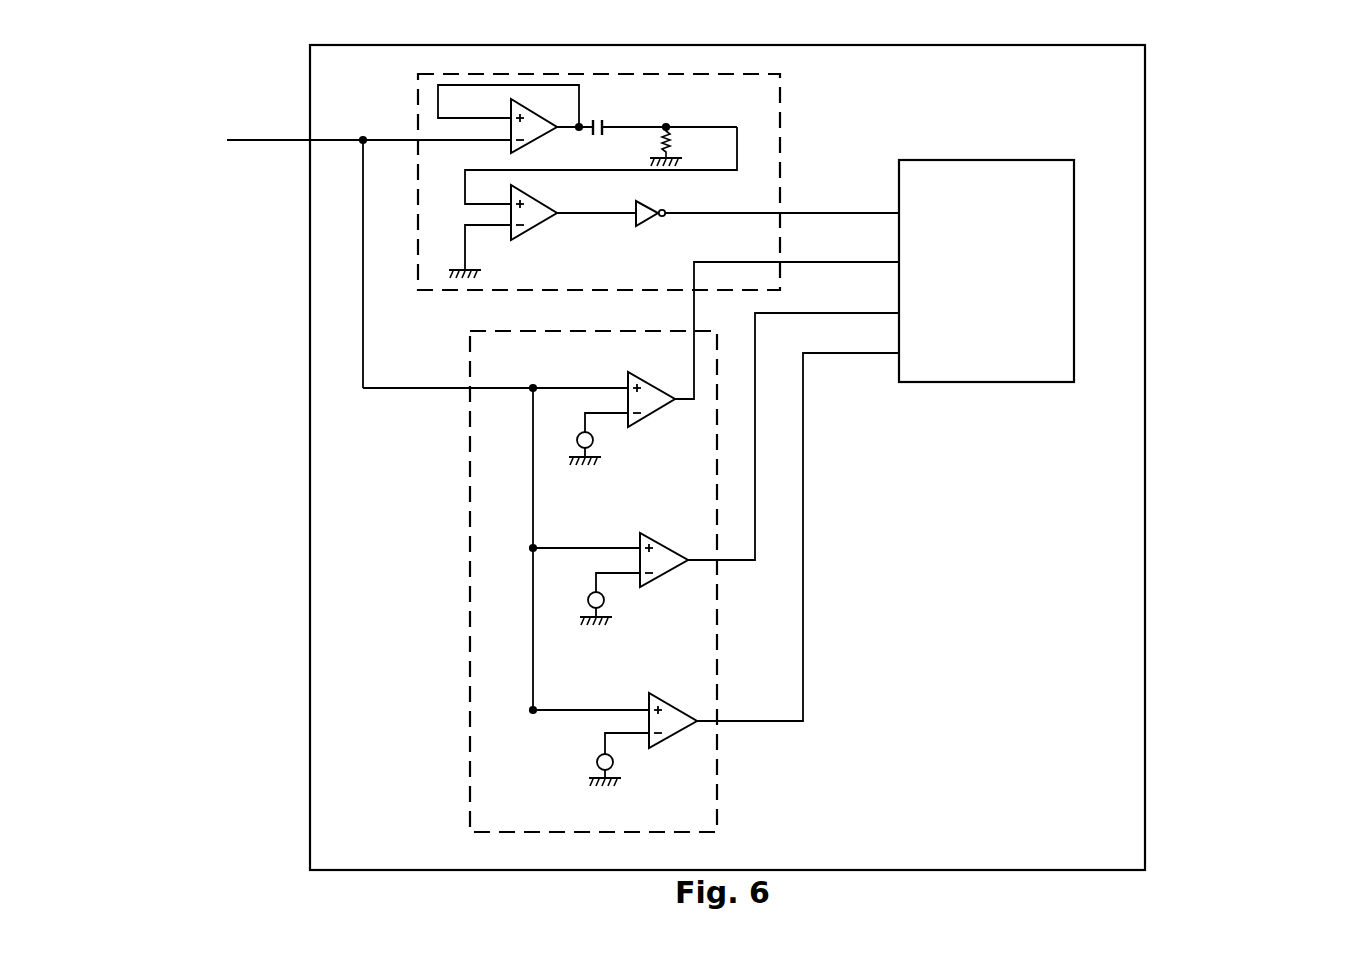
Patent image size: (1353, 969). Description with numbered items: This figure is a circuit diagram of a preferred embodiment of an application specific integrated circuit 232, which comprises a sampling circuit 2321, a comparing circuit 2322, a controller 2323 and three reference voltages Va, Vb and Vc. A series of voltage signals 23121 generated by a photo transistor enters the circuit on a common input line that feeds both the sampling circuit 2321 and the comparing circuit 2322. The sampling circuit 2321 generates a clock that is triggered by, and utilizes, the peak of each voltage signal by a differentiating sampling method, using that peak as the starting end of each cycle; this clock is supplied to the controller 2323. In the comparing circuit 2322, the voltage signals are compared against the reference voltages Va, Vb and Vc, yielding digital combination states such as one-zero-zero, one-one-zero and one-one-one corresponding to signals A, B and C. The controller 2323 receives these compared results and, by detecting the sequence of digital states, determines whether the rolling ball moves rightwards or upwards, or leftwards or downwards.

The application specific integrated circuit 232 is at (1145, 112).
The sampling circuit 2321 is at (424, 124).
The comparing circuit 2322 is at (505, 742).
The controller 2323 is at (1036, 325).
The voltage signals 23121 is at (256, 141).